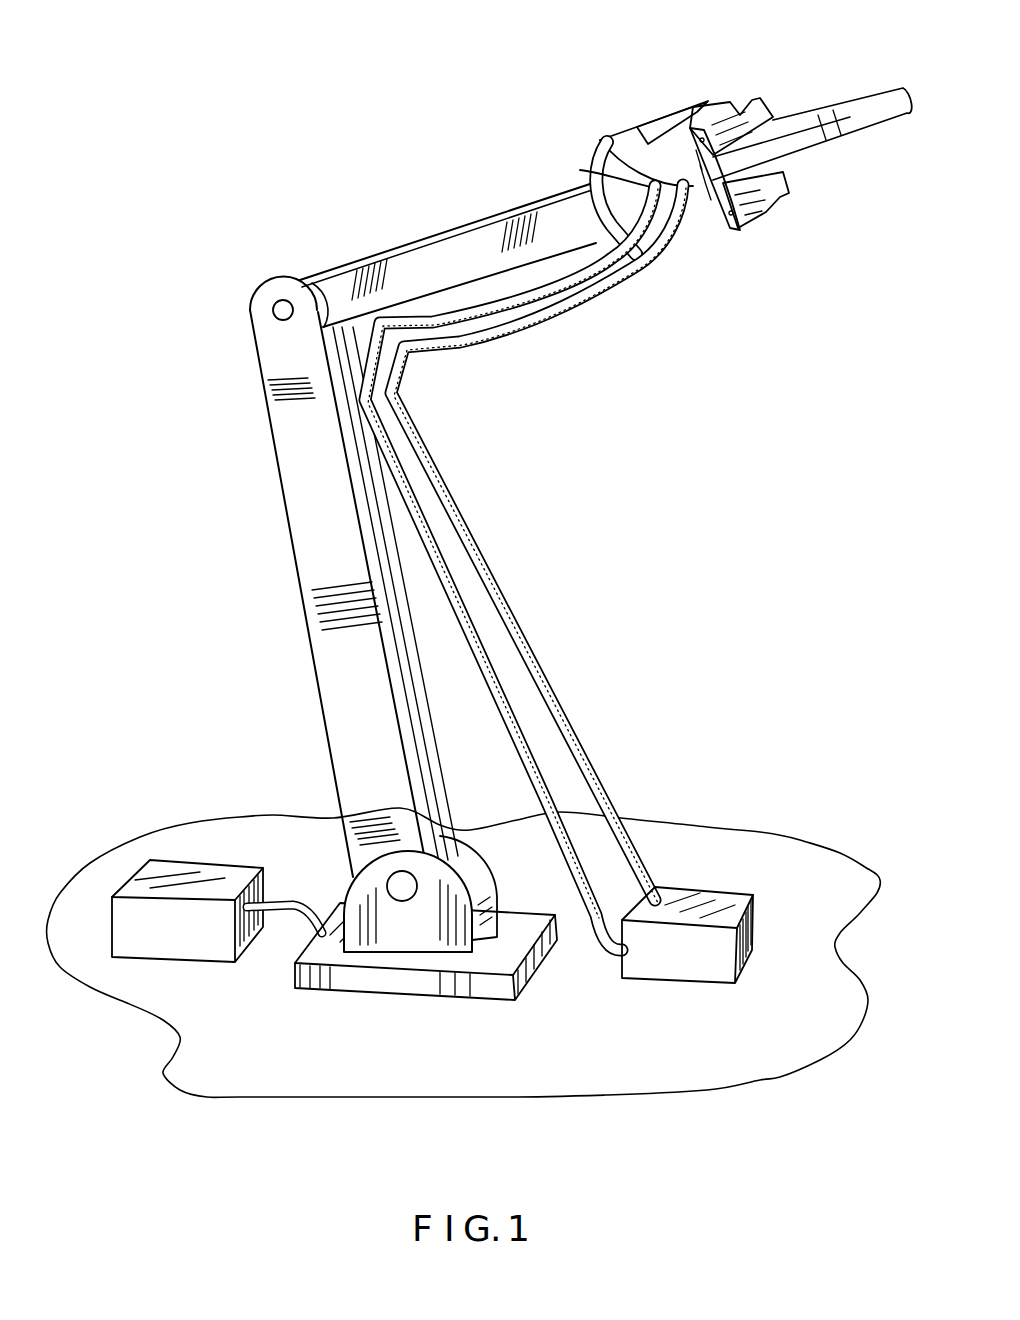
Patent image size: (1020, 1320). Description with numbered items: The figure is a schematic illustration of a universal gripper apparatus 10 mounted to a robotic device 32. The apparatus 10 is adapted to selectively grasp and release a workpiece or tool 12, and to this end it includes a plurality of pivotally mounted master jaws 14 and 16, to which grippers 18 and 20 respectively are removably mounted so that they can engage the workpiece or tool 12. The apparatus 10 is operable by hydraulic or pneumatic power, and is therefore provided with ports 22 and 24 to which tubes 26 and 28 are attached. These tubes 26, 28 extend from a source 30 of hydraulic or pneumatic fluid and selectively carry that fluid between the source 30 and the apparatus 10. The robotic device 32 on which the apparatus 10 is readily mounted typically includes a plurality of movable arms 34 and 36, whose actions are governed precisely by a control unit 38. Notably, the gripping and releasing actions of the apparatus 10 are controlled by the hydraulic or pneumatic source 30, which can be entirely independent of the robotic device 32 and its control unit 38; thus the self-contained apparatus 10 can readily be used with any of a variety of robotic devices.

The universal gripper apparatus 10 is at (624, 90).
The workpiece or tool 12 is at (857, 102).
The master jaw 14 is at (678, 118).
The master jaw 16 is at (733, 230).
The gripper 18 is at (727, 102).
The gripper 20 is at (787, 180).
The port 22 is at (580, 170).
The port 24 is at (614, 140).
The tube 26 is at (507, 312).
The tube 28 is at (577, 300).
The source of hydraulic or pneumatic fluid 30 is at (663, 969).
The robotic device 32 is at (262, 272).
The movable arm 34 is at (427, 232).
The movable arm 36 is at (297, 573).
The control unit 38 is at (160, 942).